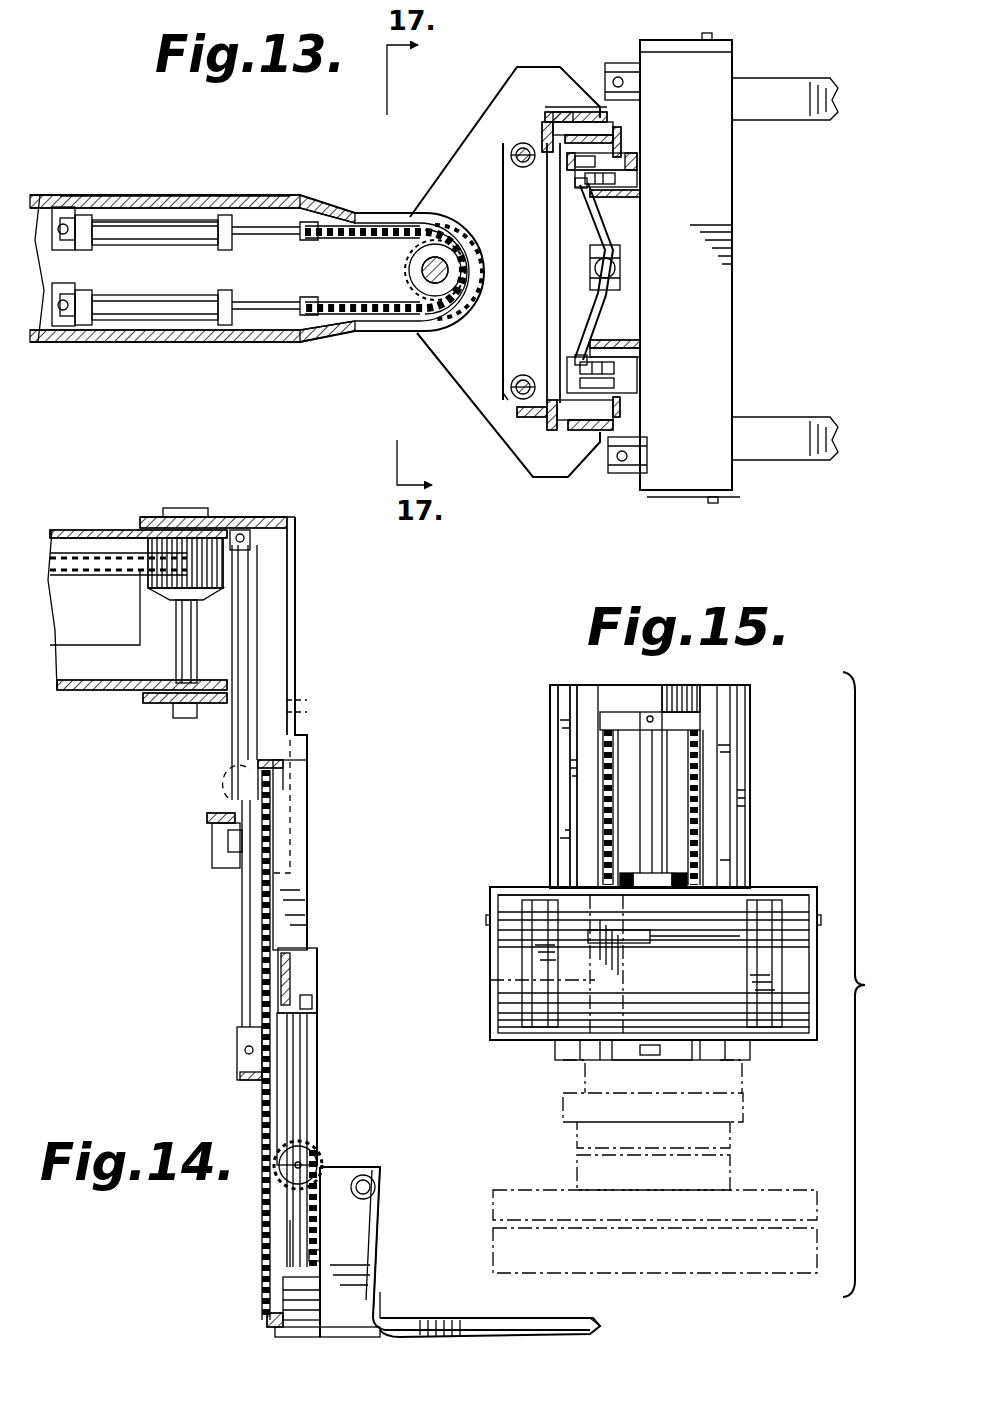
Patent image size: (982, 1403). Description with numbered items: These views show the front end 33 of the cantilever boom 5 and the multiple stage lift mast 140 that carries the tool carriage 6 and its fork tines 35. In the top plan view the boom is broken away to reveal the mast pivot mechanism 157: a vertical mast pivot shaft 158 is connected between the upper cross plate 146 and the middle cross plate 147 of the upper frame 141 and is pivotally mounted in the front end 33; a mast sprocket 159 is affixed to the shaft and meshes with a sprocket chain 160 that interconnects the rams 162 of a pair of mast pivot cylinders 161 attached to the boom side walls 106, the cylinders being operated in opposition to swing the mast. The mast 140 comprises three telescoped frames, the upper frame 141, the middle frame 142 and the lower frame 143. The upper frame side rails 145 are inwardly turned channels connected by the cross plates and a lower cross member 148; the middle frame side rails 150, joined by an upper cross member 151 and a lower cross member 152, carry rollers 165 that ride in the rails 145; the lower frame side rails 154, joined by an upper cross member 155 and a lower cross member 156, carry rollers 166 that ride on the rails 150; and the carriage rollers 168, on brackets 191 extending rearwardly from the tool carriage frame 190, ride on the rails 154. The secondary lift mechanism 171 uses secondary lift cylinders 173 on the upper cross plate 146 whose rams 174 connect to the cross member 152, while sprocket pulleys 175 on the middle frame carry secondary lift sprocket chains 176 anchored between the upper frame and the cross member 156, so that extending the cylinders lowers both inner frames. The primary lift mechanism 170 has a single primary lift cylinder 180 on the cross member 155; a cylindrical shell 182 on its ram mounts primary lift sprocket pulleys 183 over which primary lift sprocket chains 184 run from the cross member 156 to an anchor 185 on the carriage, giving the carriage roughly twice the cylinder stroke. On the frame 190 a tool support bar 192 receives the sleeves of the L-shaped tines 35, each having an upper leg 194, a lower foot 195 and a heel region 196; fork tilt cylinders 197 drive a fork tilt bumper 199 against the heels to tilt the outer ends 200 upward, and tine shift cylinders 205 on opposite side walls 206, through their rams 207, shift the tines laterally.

In FIG. 13, the boom assembly 5 is at (238, 202).
In FIG. 14, the boom assembly 5 is at (77, 527).
In FIG. 13, the tool carriage 6 is at (638, 42).
In FIG. 14, the tool carriage 6 is at (381, 1168).
In FIG. 15, the tool carriage 6 is at (490, 886).
In FIG. 13, the front end 33 is at (384, 330).
In FIG. 14, the front end 33 is at (82, 690).
In FIG. 13, the fork tines 35 is at (786, 86).
In FIG. 14, the fork tines 35 is at (458, 1313).
In FIG. 15, the fork tines 35 is at (530, 978).
In FIG. 13, the side walls 106 is at (46, 196).
In FIG. 13, the mast 140 is at (533, 110).
In FIG. 14, the mast 140 is at (272, 515).
In FIG. 15, the mast 140 is at (753, 685).
In FIG. 13, the upper frame 141 is at (540, 432).
In FIG. 14, the upper frame 141 is at (298, 640).
In FIG. 15, the upper frame 141 is at (548, 700).
In FIG. 13, the middle frame 142 is at (628, 415).
In FIG. 14, the middle frame 142 is at (309, 830).
In FIG. 15, the middle frame 142 is at (556, 740).
In FIG. 13, the lower frame 143 is at (643, 352).
In FIG. 14, the lower frame 143 is at (321, 1000).
In FIG. 15, the lower frame 143 is at (575, 772).
In FIG. 13, the side rails 145 is at (607, 118).
In FIG. 14, the side rails 145 is at (296, 556).
In FIG. 14, the upper cross plate 146 is at (145, 517).
In FIG. 13, the middle cross plate 147 is at (445, 355).
In FIG. 14, the middle cross plate 147 is at (148, 702).
In FIG. 14, the lower cross member 148 is at (210, 815).
In FIG. 13, the side rails 150 is at (621, 142).
In FIG. 14, the side rails 150 is at (306, 785).
In FIG. 14, the upper cross member 151 is at (284, 764).
In FIG. 14, the lower cross member 152 is at (238, 1078).
In FIG. 13, the side rails 154 is at (630, 160).
In FIG. 13, the upper cross member 155 is at (612, 300).
In FIG. 14, the upper cross member 155 is at (296, 975).
In FIG. 15, the upper cross member 155 is at (614, 690).
In FIG. 14, the lower cross member 156 is at (266, 1322).
In FIG. 15, the lower cross member 156 is at (655, 1060).
In FIG. 13, the mast pivot mechanism 157 is at (148, 214).
In FIG. 13, the mast pivot shaft 158 is at (437, 257).
In FIG. 14, the mast pivot shaft 158 is at (192, 508).
In FIG. 13, the mast sprocket 159 is at (398, 285).
In FIG. 13, the sprocket chain 160 is at (350, 246).
In FIG. 14, the sprocket chain 160 is at (110, 573).
In FIG. 13, the mast pivot cylinders 161 is at (107, 225).
In FIG. 13, the piston rod 162 is at (268, 240).
In FIG. 13, the rollers 165 is at (555, 116).
In FIG. 13, the rollers 166 is at (640, 178).
In FIG. 13, the rollers 168 is at (572, 182).
In FIG. 13, the primary lift mechanism 170 is at (624, 268).
In FIG. 14, the primary lift mechanism 170 is at (319, 1038).
In FIG. 15, the primary lift mechanism 170 is at (670, 796).
In FIG. 13, the secondary lift mechanism 171 is at (503, 394).
In FIG. 14, the secondary lift mechanism 171 is at (232, 738).
In FIG. 13, the secondary lift cylinders 173 is at (508, 167).
In FIG. 14, the secondary lift cylinders 173 is at (185, 655).
In FIG. 14, the rams 174 is at (242, 903).
In FIG. 14, the sprocket pulleys 175 is at (228, 778).
In FIG. 14, the secondary lift sprocket chains 176 is at (262, 850).
In FIG. 13, the primary lift cylinder 180 is at (568, 282).
In FIG. 14, the primary lift cylinder 180 is at (307, 1075).
In FIG. 15, the primary lift cylinder 180 is at (662, 758).
In FIG. 14, the cylindrical shell 182 is at (290, 1256).
In FIG. 14, the primary lift sprocket pulleys 183 is at (272, 1160).
In FIG. 14, the primary lift sprocket chains 184 is at (266, 1212).
In FIG. 15, the primary lift sprocket chains 184 is at (606, 815).
In FIG. 14, the anchor 185 is at (335, 1248).
In FIG. 13, the tool carriage frame 190 is at (686, 497).
In FIG. 14, the tool carriage frame 190 is at (342, 1165).
In FIG. 15, the tool carriage frame 190 is at (775, 886).
In FIG. 13, the brackets 191 is at (630, 200).
In FIG. 14, the tool support bar 192 is at (376, 1187).
In FIG. 15, the tool support bar 192 is at (692, 943).
In FIG. 14, the upper leg 194 is at (390, 1260).
In FIG. 14, the lower foot 195 is at (540, 1318).
In FIG. 14, the heel region 196 is at (386, 1320).
In FIG. 13, the fork tilt cylinders 197 is at (610, 66).
In FIG. 14, the fork tilt cylinders 197 is at (300, 1305).
In FIG. 15, the fork tilt bumper 199 is at (500, 1020).
In FIG. 14, the outer ends 200 is at (597, 1326).
In FIG. 15, the outer ends 200 is at (540, 1036).
In FIG. 15, the tine shift cylinders 205 is at (505, 933).
In FIG. 15, the side walls 206 is at (490, 965).
In FIG. 15, the ram 207 is at (725, 946).